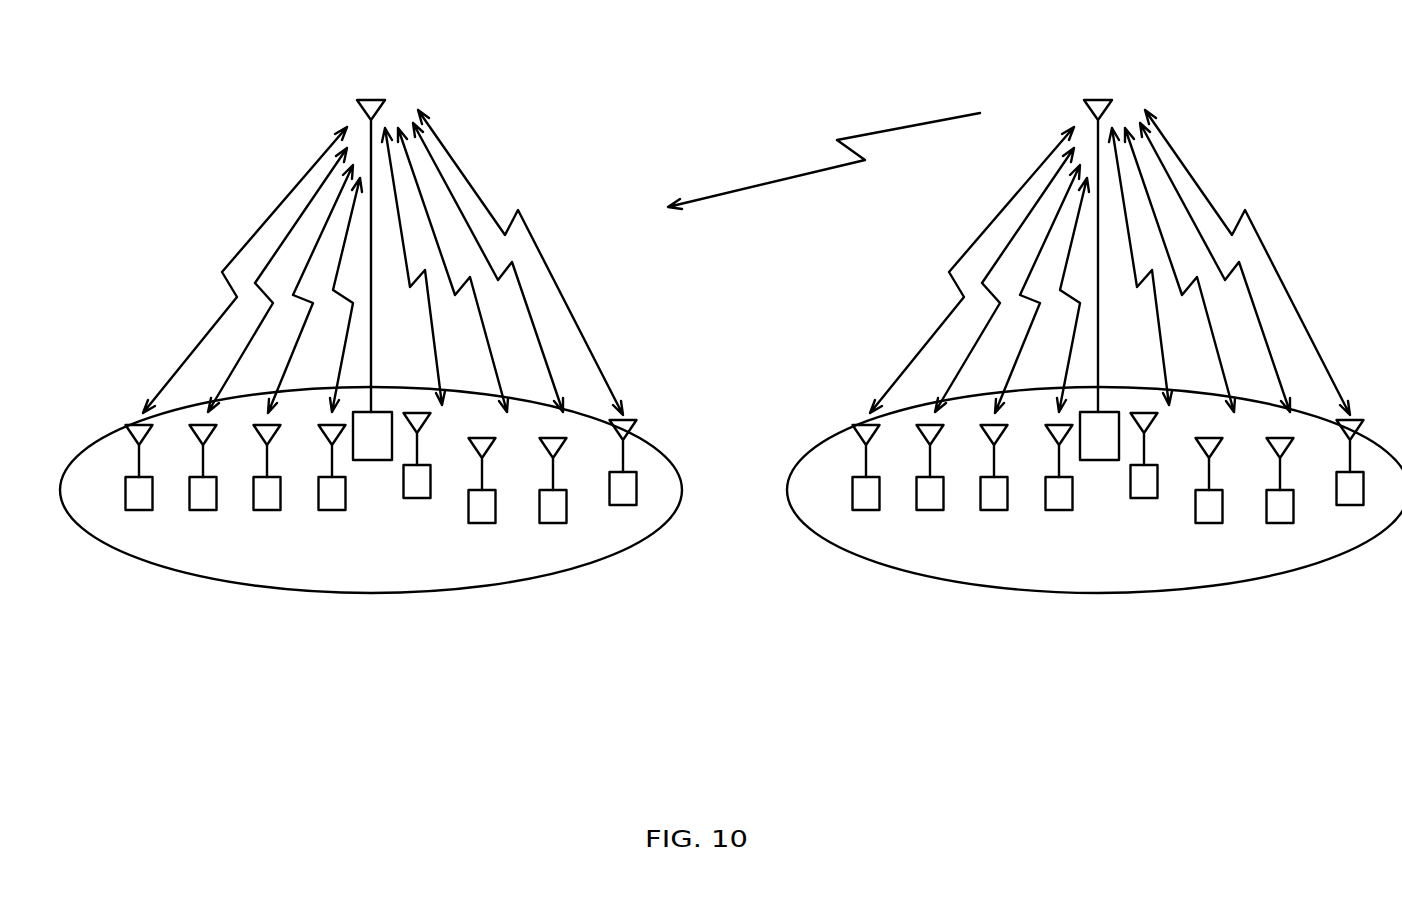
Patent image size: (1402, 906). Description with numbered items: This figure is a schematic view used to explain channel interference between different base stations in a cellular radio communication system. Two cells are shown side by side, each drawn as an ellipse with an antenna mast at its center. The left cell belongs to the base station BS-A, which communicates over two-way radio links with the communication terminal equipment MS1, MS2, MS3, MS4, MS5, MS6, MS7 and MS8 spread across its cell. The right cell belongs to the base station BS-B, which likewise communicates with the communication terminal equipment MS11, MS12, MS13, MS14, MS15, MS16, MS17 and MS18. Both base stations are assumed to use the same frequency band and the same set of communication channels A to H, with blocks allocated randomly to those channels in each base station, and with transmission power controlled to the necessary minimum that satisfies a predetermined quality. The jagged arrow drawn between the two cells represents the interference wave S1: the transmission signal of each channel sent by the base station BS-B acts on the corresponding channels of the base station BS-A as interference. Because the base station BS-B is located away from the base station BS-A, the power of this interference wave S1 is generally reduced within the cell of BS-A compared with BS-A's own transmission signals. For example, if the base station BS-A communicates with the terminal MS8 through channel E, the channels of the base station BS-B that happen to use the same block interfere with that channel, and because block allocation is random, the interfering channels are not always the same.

The base station BS-A is at (386, 98).
The base station BS-B is at (1126, 255).
The interference wave S1 is at (777, 180).
The communication terminal equipment MS1 is at (140, 483).
The communication terminal equipment MS2 is at (203, 483).
The communication terminal equipment MS3 is at (268, 483).
The communication terminal equipment MS4 is at (333, 483).
The communication terminal equipment MS5 is at (420, 470).
The communication terminal equipment MS6 is at (483, 495).
The communication terminal equipment MS7 is at (553, 495).
The communication terminal equipment MS8 is at (623, 476).
The communication terminal equipment MS11 is at (862, 484).
The communication terminal equipment MS12 is at (927, 484).
The communication terminal equipment MS13 is at (994, 484).
The communication terminal equipment MS14 is at (1060, 484).
The communication terminal equipment MS15 is at (1144, 471).
The communication terminal equipment MS16 is at (1209, 496).
The communication terminal equipment MS17 is at (1282, 496).
The communication terminal equipment MS18 is at (1354, 478).